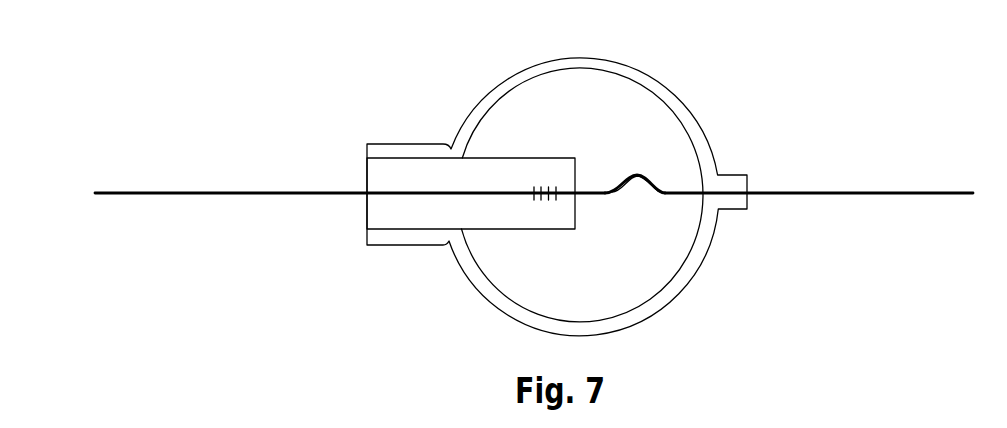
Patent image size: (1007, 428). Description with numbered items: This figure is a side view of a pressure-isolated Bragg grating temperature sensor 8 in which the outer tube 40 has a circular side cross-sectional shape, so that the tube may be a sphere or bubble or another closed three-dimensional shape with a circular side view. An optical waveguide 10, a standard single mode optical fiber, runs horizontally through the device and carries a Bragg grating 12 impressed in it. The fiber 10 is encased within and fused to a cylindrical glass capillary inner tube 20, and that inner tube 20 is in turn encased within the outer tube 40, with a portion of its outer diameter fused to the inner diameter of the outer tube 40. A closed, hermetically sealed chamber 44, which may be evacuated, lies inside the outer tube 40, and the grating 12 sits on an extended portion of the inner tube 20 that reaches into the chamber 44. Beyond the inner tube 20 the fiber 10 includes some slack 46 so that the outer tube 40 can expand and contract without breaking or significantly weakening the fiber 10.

The pressure-isolated Bragg grating temperature sensor 8 is at (357, 110).
The optical waveguide 10 is at (243, 193).
The Bragg grating 12 is at (536, 190).
The inner tube 20 is at (411, 185).
The outer tube 40 is at (490, 106).
The chamber 44 is at (637, 263).
The slack 46 is at (650, 176).